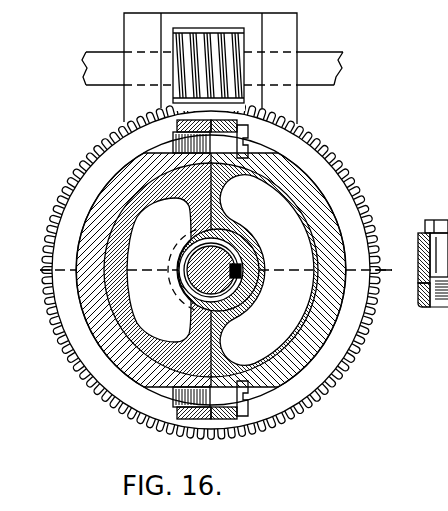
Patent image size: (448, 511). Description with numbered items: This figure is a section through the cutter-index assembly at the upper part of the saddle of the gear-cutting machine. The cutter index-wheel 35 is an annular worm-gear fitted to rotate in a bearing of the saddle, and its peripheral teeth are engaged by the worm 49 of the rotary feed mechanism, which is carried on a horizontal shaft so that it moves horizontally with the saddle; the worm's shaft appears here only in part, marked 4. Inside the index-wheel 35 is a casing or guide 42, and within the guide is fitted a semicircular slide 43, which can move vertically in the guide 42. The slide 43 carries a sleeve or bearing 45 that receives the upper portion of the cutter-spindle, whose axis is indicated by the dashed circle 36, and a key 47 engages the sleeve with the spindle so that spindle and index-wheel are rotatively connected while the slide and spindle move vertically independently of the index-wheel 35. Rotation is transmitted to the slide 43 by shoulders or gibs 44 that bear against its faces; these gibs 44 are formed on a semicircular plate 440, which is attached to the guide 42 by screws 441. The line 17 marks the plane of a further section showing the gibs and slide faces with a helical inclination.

The worm shaft 4 is at (342, 62).
The section line 17 is at (218, 273).
The cutter index-wheel 35 is at (322, 372).
The cutter-spindle 36 is at (178, 297).
The casing or guide 42 is at (103, 352).
The semicircular slide 43 is at (95, 333).
The shoulders or gibs 44 is at (232, 352).
The sleeve or bearing 45 is at (238, 290).
The key 47 is at (242, 267).
The worm 49 is at (228, 62).
The semicircular plate 440 is at (326, 218).
The screws 441 is at (250, 405).